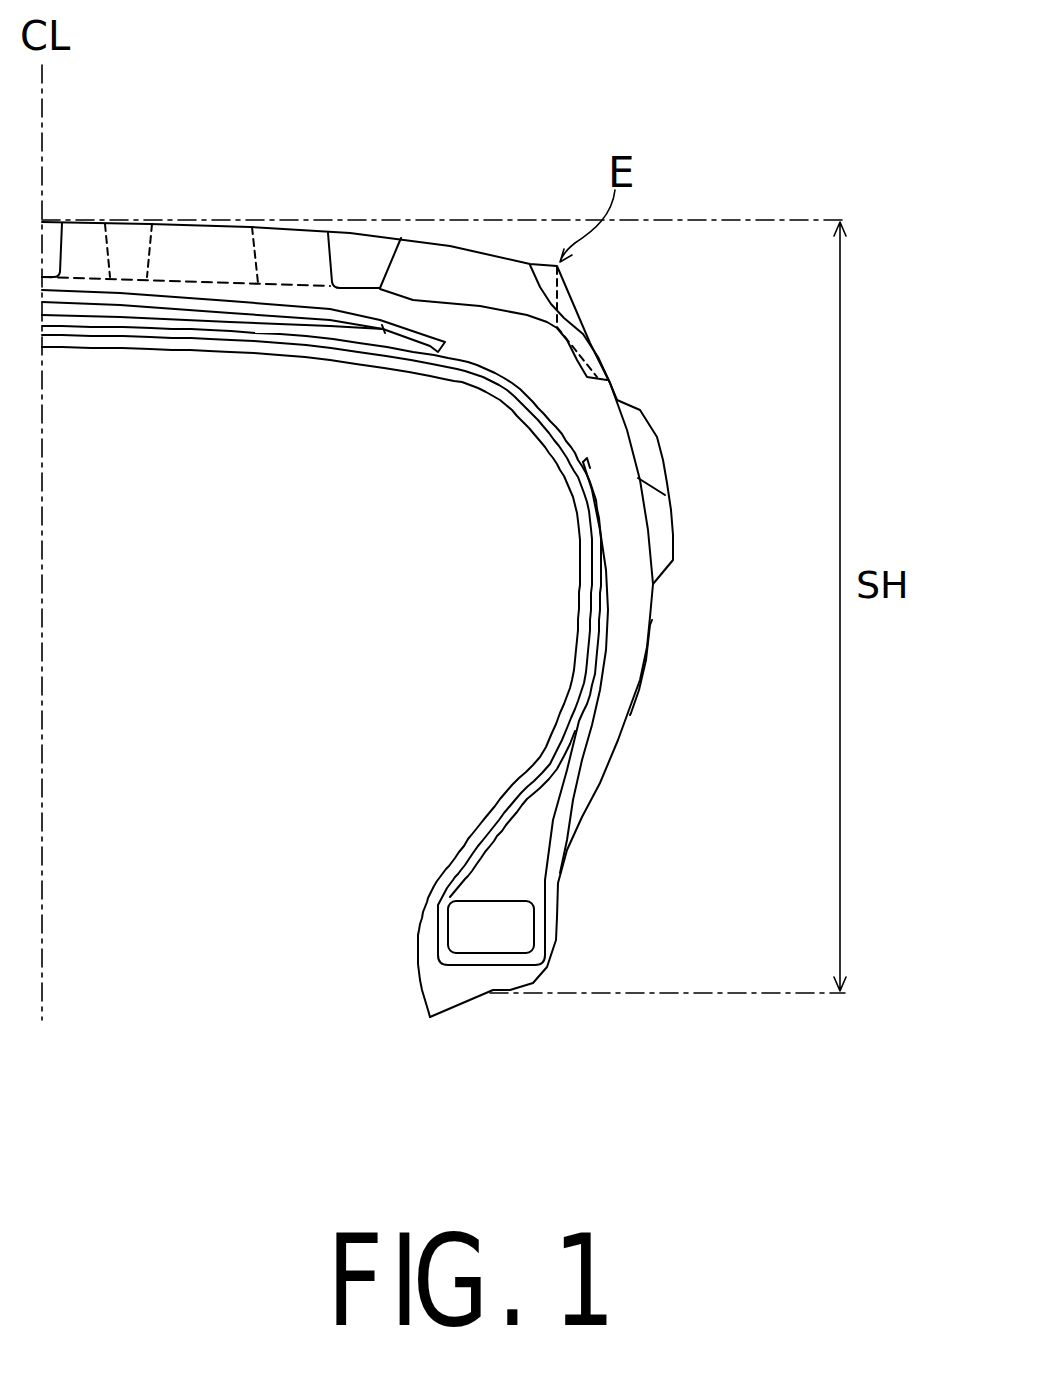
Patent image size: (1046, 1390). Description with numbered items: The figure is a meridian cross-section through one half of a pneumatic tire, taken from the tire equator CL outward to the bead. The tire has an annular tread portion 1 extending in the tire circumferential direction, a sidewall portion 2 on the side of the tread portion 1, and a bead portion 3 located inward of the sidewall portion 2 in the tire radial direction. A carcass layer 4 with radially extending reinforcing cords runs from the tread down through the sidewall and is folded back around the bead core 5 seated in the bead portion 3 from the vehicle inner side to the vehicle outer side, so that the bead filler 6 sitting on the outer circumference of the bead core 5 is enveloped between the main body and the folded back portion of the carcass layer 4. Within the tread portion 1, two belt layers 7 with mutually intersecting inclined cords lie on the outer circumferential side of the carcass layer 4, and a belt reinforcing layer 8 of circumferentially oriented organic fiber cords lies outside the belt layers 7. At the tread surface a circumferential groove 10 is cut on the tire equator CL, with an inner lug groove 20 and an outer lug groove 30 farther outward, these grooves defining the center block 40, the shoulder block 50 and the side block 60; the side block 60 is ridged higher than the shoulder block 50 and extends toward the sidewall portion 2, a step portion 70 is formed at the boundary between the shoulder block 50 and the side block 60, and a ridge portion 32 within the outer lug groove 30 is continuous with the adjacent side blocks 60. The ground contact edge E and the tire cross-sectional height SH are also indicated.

The tread portion 1 is at (242, 194).
The sidewall portion 2 is at (686, 632).
The bead portion 3 is at (620, 968).
The carcass layer 4 is at (527, 413).
The bead core 5 is at (475, 935).
The bead filler 6 is at (500, 863).
The belt layer 7 is at (173, 310).
The belt reinforcing layer 8 is at (277, 307).
The circumferential groove 10 is at (53, 250).
The inner lug groove 20 is at (133, 243).
The outer lug groove 30 is at (363, 280).
The center block 40 is at (190, 220).
The shoulder block 50 is at (475, 252).
The side block 60 is at (660, 437).
The step portion 70 is at (603, 380).
The ridge portion 32 is at (667, 527).